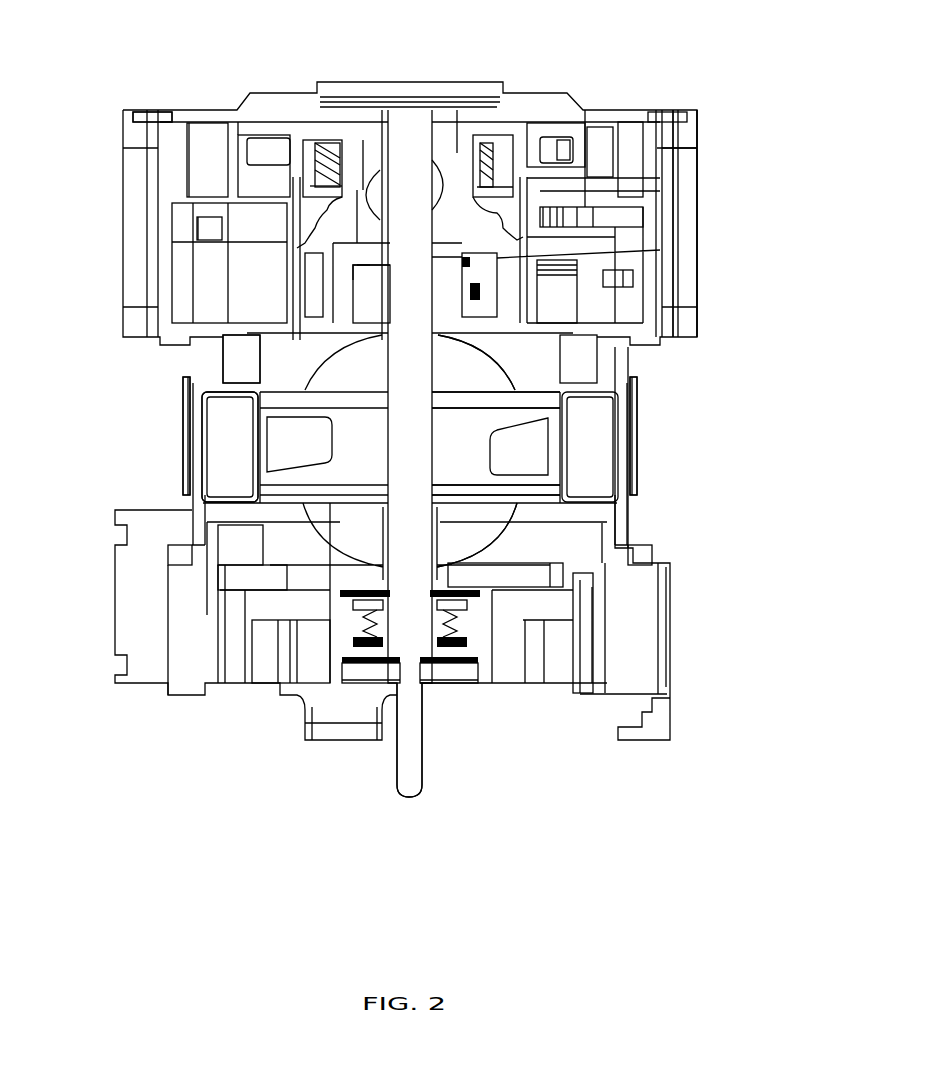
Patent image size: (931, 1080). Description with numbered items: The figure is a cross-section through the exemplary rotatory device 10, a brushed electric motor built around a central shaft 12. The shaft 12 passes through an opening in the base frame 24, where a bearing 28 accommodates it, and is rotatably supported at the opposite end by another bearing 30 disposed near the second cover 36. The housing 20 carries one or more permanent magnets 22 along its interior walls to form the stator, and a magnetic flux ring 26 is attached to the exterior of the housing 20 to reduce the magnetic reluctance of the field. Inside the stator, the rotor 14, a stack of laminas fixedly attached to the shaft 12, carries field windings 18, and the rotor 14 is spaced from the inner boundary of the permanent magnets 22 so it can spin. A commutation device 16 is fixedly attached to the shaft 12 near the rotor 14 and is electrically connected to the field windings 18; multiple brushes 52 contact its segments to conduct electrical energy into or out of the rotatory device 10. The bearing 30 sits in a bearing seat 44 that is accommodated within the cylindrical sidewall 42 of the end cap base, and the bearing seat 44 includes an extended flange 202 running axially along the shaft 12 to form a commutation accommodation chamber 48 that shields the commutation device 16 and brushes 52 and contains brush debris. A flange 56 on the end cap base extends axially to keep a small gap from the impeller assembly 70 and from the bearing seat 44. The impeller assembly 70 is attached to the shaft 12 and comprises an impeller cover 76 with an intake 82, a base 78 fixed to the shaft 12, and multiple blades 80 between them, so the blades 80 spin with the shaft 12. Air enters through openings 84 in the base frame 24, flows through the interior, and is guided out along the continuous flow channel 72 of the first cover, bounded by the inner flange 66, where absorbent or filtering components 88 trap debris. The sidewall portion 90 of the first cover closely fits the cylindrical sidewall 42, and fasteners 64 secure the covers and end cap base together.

The rotatory device 10 is at (190, 744).
The shaft 12 is at (413, 740).
The rotor 14 is at (537, 422).
The commutation device 16 is at (370, 293).
The field windings 18 is at (340, 377).
The housing 20 is at (205, 438).
The permanent magnets 22 is at (590, 450).
The base frame 24 is at (670, 662).
The magnetic flux ring 26 is at (643, 477).
The bearing 28 is at (463, 648).
The bearing 30 is at (375, 130).
The second cover 36 is at (410, 95).
The cylindrical sidewall 42 is at (287, 200).
The bearing seat 44 is at (313, 252).
The commutation accommodation chamber 48 is at (340, 310).
The brushes 52 is at (620, 257).
The flange 56 is at (215, 372).
The fasteners 64 is at (135, 110).
The inner flange 66 is at (620, 112).
The impeller assembly 70 is at (643, 170).
The flow channel 72 is at (217, 127).
The impeller cover 76 is at (535, 125).
The base 78 is at (463, 127).
The blades 80 is at (310, 128).
The intake 82 is at (510, 127).
The openings 84 is at (555, 657).
The absorbent or filtering components 88 is at (620, 157).
The sidewall portion 90 is at (630, 190).
The extended flange 202 is at (307, 285).